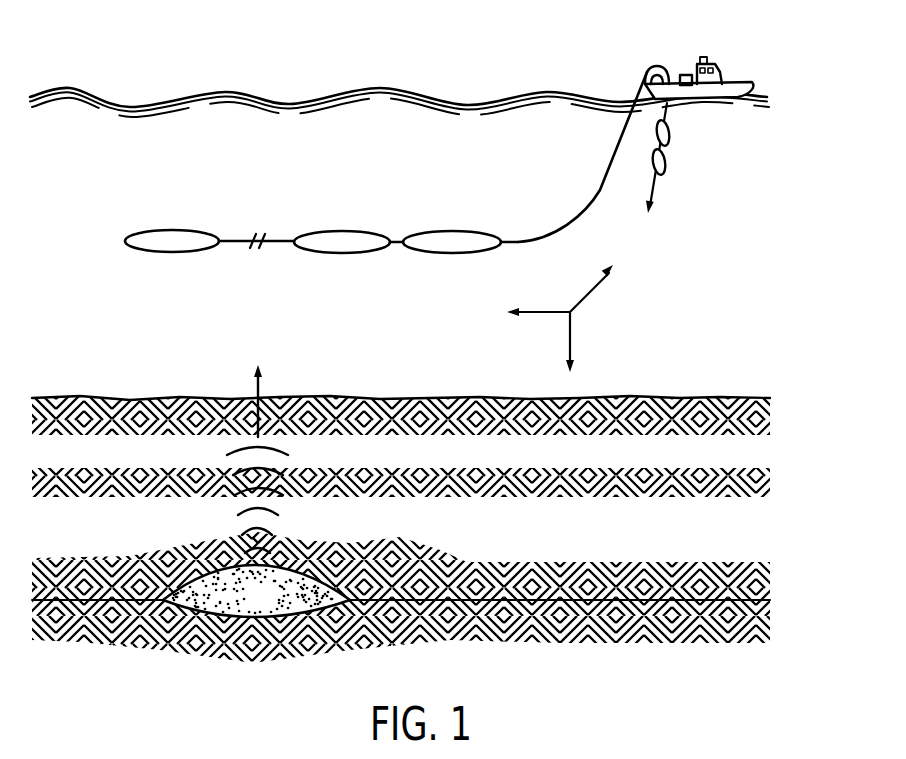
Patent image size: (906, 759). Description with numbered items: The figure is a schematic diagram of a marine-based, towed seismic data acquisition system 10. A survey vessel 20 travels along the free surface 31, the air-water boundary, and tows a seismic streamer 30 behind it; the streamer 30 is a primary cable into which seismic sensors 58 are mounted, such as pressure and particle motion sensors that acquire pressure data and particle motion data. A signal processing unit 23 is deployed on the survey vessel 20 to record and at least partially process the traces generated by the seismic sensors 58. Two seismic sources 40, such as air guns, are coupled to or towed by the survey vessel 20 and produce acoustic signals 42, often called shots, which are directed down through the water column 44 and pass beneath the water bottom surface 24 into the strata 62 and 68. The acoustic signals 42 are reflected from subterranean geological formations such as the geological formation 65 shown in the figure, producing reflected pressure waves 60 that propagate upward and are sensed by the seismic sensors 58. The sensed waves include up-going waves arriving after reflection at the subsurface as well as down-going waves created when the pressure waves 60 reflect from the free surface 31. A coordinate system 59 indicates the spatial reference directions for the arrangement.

The marine-based towed seismic data acquisition system 10 is at (203, 57).
The survey vessel 20 is at (719, 57).
The signal processing unit 23 is at (684, 75).
The water bottom surface 24 is at (709, 397).
The seismic streamer 30 is at (612, 172).
The free surface 31 is at (346, 92).
The seismic sources 40 is at (670, 134).
The acoustic signal 42 is at (687, 160).
The water column 44 is at (718, 278).
The seismic sensors 58 is at (135, 232).
The coordinate system 59 is at (546, 324).
The pressure waves 60 is at (226, 518).
The stratum 62 is at (483, 575).
The geological formation 65 is at (272, 608).
The stratum 68 is at (648, 628).